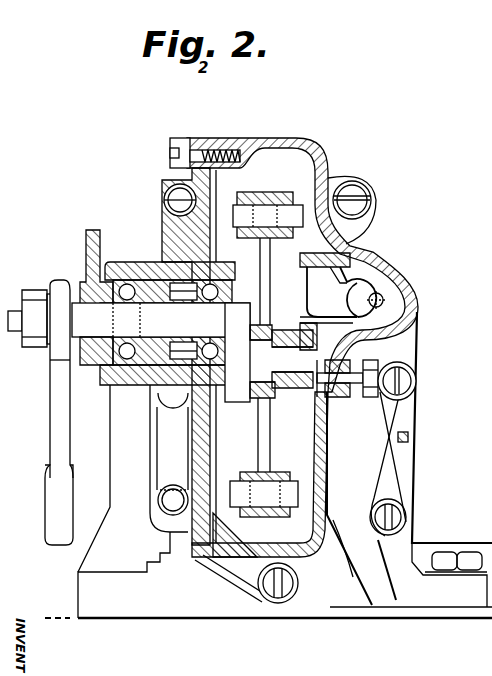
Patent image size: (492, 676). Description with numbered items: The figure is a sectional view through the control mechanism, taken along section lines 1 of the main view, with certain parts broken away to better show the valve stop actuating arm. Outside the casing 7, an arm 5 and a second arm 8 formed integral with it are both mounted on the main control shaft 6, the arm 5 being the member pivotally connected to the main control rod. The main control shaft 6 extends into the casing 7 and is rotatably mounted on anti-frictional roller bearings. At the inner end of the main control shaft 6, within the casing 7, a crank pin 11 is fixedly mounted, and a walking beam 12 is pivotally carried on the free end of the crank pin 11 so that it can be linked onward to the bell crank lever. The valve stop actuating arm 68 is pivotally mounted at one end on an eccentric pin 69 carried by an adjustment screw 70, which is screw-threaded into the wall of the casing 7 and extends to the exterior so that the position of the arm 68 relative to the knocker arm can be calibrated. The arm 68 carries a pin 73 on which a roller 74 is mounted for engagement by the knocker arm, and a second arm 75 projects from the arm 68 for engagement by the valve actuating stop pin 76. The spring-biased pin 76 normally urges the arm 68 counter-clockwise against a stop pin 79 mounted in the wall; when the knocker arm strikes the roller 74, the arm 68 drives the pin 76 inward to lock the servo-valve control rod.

The section line 1 is at (388, 312).
The arm 5 is at (60, 442).
The main control shaft 6 is at (106, 330).
The casing 7 is at (308, 142).
The second arm 8 is at (92, 268).
The crank pin 11 is at (252, 392).
The walking beam 12 is at (265, 308).
The arm 68 is at (310, 300).
The eccentric pin 69 is at (310, 390).
The adjustment screw 70 is at (356, 396).
The pin 73 is at (310, 345).
The roller 74 is at (307, 325).
The second arm 75 is at (346, 298).
The valve actuating stop pin 76 is at (396, 300).
The stop pin 79 is at (300, 262).